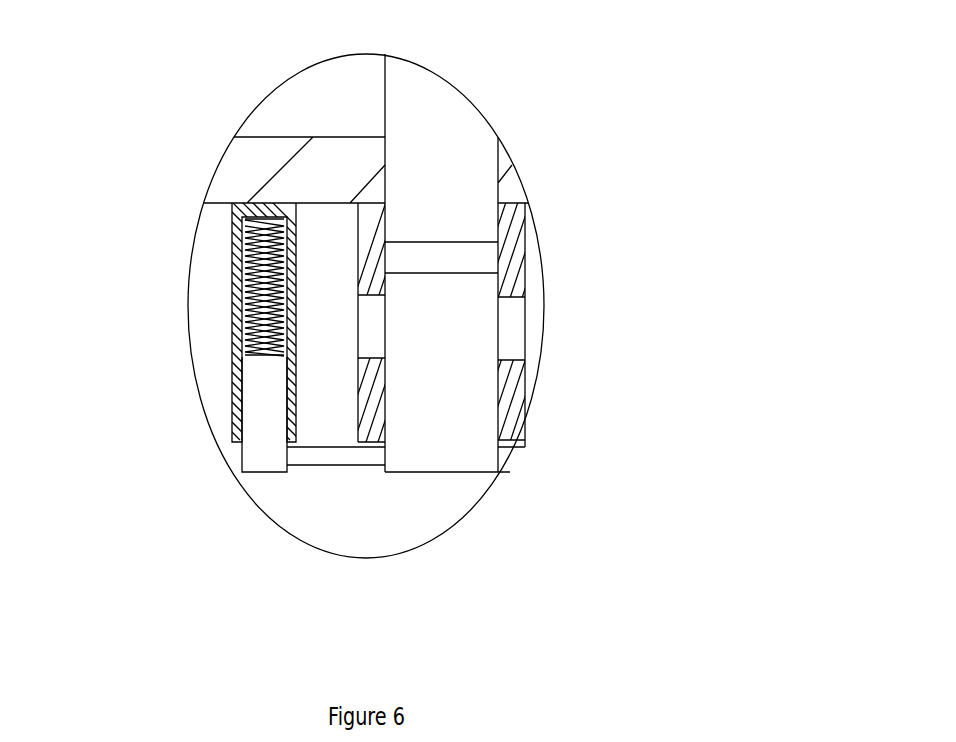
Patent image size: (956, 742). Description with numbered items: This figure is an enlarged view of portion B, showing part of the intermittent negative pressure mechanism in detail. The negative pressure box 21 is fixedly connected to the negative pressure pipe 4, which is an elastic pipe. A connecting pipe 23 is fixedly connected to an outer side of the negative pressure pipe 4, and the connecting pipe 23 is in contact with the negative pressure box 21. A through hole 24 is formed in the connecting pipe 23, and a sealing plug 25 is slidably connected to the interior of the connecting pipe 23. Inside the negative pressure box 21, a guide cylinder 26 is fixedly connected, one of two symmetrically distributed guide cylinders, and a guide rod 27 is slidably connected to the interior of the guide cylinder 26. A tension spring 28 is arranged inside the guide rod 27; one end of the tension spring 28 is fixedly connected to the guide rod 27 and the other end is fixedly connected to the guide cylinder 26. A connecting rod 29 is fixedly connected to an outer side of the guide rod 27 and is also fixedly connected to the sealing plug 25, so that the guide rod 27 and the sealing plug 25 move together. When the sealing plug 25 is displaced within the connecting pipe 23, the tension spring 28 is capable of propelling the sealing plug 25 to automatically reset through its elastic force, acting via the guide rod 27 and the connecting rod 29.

The negative pressure pipe 4 is at (448, 153).
The negative pressure box 21 is at (255, 165).
The connecting pipe 23 is at (513, 250).
The through hole 24 is at (507, 327).
The sealing plug 25 is at (452, 400).
The guide cylinder 26 is at (240, 432).
The guide rod 27 is at (258, 370).
The tension spring 28 is at (243, 265).
The connecting rod 29 is at (342, 457).
The portion B is at (262, 515).